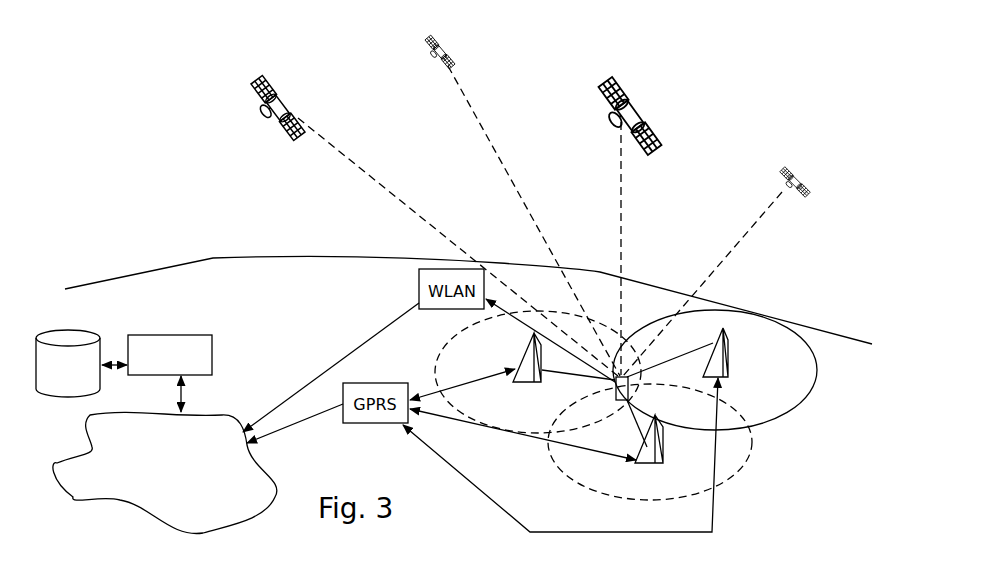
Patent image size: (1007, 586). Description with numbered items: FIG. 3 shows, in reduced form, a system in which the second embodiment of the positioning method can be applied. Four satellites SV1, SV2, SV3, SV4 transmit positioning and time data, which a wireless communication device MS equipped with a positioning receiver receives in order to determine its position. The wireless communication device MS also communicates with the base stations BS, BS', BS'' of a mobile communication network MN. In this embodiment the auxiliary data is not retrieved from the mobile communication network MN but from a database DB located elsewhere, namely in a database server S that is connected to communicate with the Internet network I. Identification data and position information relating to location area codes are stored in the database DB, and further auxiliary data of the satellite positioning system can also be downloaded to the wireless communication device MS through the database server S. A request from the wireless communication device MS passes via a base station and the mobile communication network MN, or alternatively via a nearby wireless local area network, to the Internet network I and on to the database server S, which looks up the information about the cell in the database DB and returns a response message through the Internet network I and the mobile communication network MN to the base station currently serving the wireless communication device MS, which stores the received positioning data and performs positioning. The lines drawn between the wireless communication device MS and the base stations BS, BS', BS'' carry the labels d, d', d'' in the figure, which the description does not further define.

The satellite SV1 is at (266, 104).
The satellite SV2 is at (435, 42).
The satellite SV3 is at (625, 108).
The satellite SV4 is at (799, 169).
The database DB is at (88, 333).
The database server S is at (212, 356).
The Internet network I is at (224, 416).
The base station BS is at (742, 363).
The base station BS' is at (517, 377).
The base station BS'' is at (647, 473).
The wireless communication device MS is at (628, 390).
The distance between mobile station and base station BS d is at (670, 358).
The distance between mobile station and base station BS' d' is at (578, 368).
The distance between mobile station and base station BS'' d'' is at (630, 423).
The mobile communication network MN is at (753, 503).